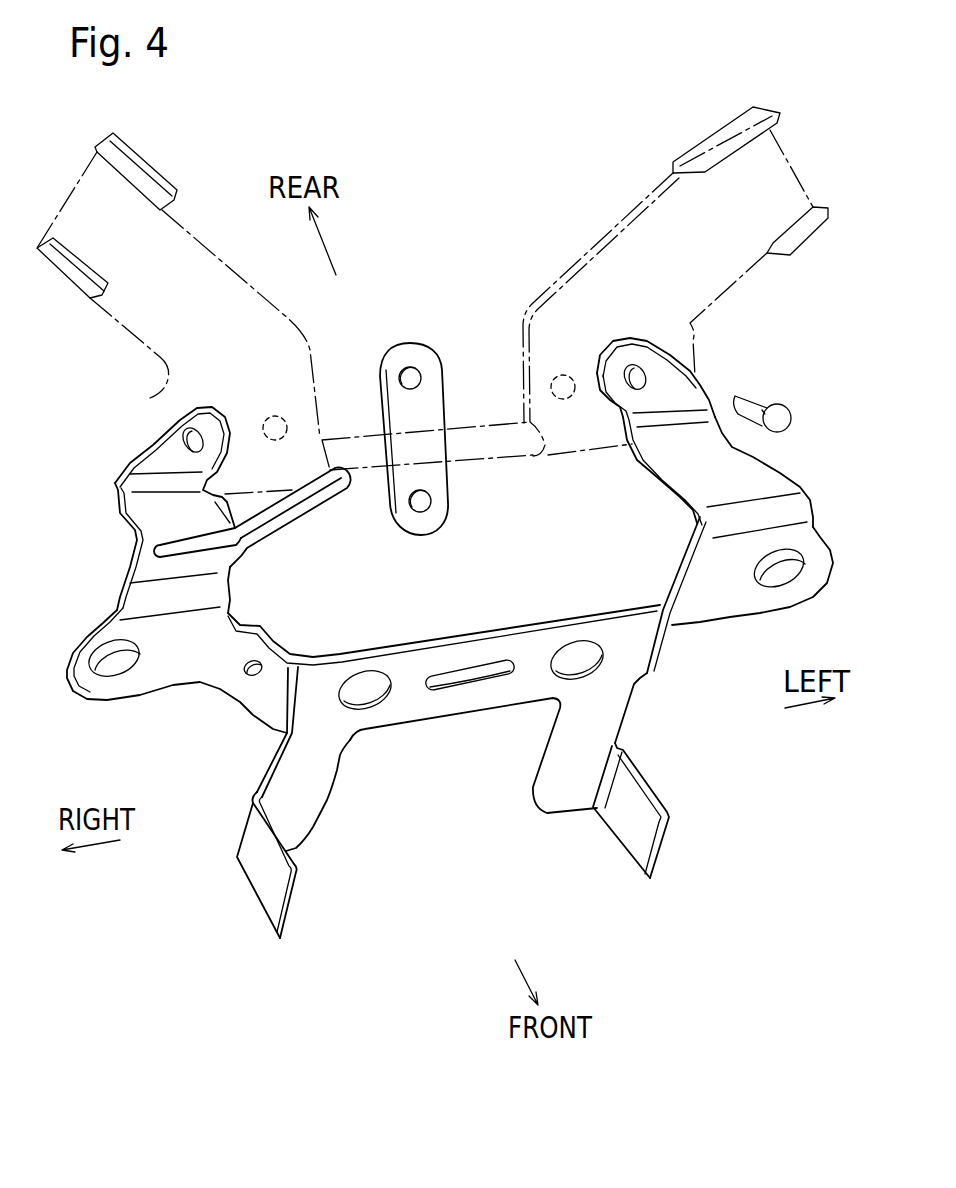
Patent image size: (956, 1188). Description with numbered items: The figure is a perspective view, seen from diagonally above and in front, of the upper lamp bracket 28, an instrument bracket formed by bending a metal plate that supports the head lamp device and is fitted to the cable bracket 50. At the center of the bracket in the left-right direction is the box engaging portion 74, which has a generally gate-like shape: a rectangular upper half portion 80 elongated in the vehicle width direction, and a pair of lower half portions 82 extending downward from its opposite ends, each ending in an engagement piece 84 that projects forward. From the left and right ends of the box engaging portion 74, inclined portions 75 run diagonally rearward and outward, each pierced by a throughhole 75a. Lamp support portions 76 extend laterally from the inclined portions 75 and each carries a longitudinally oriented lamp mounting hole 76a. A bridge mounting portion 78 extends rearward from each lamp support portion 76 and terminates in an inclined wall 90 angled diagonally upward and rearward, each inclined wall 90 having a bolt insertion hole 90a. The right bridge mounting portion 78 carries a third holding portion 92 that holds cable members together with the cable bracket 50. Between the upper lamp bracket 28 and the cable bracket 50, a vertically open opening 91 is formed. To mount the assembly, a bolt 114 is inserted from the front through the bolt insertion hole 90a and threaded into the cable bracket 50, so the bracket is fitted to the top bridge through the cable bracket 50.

The upper lamp bracket 28 is at (454, 606).
The cable bracket 50 is at (268, 302).
The box engaging portion 74 is at (455, 626).
The inclined portion 75 is at (260, 615).
The throughhole 75a is at (267, 667).
The lamp support portion 76 is at (154, 708).
The lamp mounting hole 76a is at (108, 660).
The bridge mounting portion 78 is at (113, 530).
The upper half portion 80 is at (417, 707).
The lower half portion 82 is at (308, 807).
The engagement piece 84 is at (257, 883).
The inclined wall 90 is at (157, 450).
The bolt insertion hole 90a is at (195, 430).
The opening 91 is at (496, 515).
The third holding portion 92 is at (342, 472).
The bolt 114 is at (787, 418).